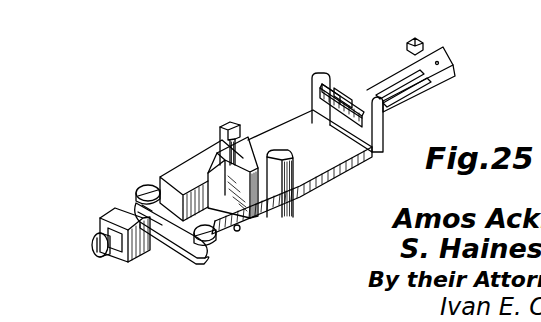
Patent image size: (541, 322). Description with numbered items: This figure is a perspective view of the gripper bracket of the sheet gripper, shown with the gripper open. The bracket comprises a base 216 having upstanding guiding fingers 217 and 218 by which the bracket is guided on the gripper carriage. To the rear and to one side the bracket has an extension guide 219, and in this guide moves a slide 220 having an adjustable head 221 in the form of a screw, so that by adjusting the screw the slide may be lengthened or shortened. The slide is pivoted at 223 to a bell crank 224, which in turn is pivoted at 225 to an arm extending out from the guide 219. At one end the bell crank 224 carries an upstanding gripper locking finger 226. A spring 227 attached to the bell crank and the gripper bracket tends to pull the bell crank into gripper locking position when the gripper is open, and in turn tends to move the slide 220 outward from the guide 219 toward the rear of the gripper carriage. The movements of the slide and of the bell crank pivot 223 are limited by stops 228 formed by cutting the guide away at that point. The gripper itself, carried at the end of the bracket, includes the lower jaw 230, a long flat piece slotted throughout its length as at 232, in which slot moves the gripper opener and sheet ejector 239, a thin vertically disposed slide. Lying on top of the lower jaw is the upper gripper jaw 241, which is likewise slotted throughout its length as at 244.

The base 216 is at (313, 170).
The guiding finger 217 is at (220, 128).
The guiding finger 218 is at (316, 76).
The extension guide 219 is at (187, 165).
The slide 220 is at (112, 224).
The adjustable head 221 is at (92, 247).
The pivot 223 is at (138, 192).
The bell crank 224 is at (185, 220).
The pivot 225 is at (213, 255).
The gripper locking finger 226 is at (266, 192).
The spring 227 is at (242, 229).
The stops 228 is at (148, 184).
The lower jaw 230 is at (437, 88).
The slot 232 is at (312, 112).
The gripper opener and sheet ejector 239 is at (350, 125).
The upper gripper jaw 241 is at (370, 72).
The slot 244 is at (338, 122).